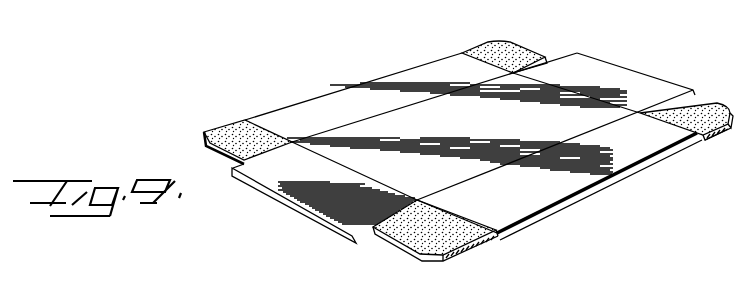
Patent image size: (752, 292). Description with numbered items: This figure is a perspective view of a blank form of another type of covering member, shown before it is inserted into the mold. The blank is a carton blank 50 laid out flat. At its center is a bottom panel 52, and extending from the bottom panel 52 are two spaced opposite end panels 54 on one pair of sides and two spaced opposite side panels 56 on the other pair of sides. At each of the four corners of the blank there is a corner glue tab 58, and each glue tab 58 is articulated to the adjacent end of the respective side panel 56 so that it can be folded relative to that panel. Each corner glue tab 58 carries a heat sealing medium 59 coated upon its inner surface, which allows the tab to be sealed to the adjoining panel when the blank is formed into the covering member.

The carton blank 50 is at (304, 77).
The bottom panel 52 is at (488, 135).
The end panel 54 is at (637, 70).
The side panel 56 is at (387, 85).
The corner glue tab 58 is at (225, 127).
The heat sealing medium 59 is at (492, 55).